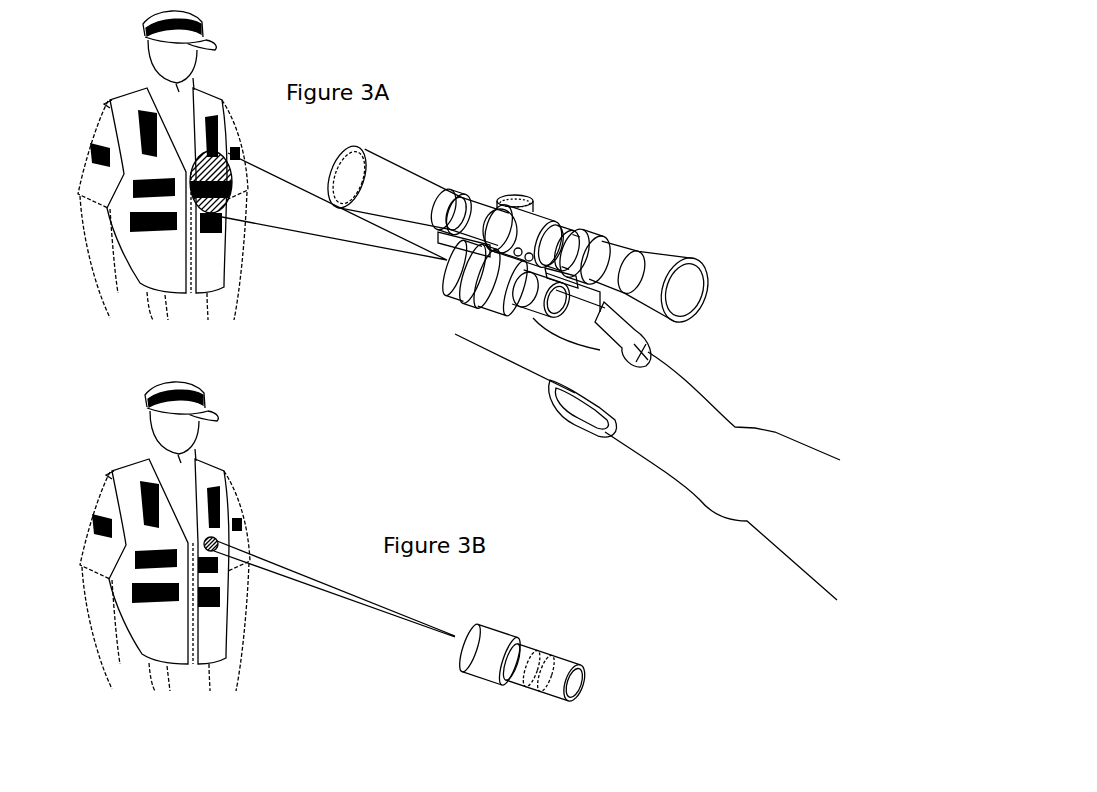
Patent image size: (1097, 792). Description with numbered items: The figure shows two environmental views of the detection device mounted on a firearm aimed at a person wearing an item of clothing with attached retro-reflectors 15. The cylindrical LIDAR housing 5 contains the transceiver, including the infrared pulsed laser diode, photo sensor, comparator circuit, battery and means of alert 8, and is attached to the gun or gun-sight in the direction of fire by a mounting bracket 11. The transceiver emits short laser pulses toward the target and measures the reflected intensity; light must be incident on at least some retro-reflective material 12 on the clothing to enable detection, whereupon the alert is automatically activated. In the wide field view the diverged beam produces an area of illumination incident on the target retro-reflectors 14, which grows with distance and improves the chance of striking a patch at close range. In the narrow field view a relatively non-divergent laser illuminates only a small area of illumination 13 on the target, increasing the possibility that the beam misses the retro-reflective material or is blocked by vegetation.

In FIG. 3A, the cylindrical LIDAR housing 5 is at (465, 267).
In FIG. 3A, the means of alert 8 is at (553, 300).
In FIG. 3A, the mounting bracket 11 is at (541, 236).
In FIG. 3A, the retro-reflective material 12 is at (147, 236).
In FIG. 3B, the small area of illumination 13 is at (220, 534).
In FIG. 3A, the area of illumination incident on target retro-reflectors 14 is at (178, 176).
In FIG. 3B, the item of clothing with attached retro-reflectors 15 is at (172, 627).